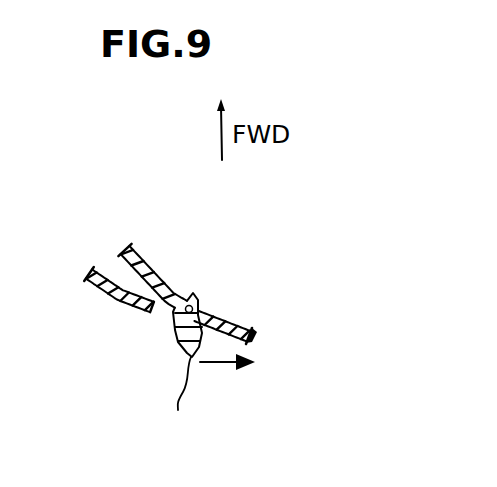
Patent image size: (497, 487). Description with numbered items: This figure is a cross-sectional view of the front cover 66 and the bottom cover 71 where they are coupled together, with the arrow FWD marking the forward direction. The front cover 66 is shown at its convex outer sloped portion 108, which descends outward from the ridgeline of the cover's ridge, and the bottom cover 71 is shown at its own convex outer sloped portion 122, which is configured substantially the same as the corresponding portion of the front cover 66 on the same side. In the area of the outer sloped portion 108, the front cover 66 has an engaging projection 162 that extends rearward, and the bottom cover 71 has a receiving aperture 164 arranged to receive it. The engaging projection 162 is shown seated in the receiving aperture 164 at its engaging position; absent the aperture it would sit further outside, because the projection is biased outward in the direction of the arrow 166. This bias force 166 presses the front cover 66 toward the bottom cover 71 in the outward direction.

The front cover 66 is at (165, 279).
The bottom cover 71 is at (90, 298).
The outer sloped portion 108 is at (145, 264).
The outer sloped portion 122 is at (244, 312).
The engaging projection 162 is at (168, 399).
The receiving aperture 164 is at (160, 315).
The arrow indicating bias direction 166 is at (221, 363).